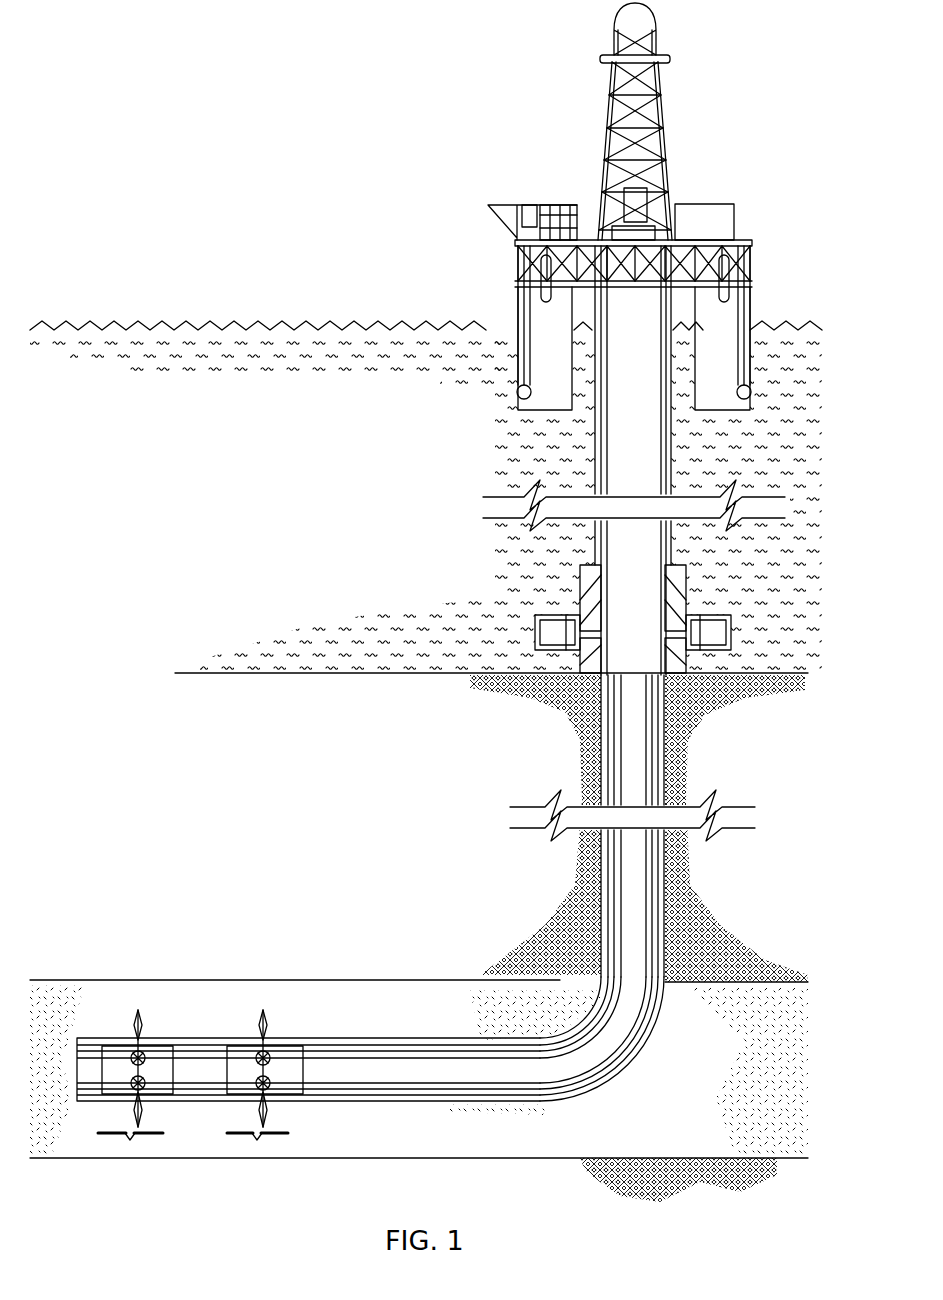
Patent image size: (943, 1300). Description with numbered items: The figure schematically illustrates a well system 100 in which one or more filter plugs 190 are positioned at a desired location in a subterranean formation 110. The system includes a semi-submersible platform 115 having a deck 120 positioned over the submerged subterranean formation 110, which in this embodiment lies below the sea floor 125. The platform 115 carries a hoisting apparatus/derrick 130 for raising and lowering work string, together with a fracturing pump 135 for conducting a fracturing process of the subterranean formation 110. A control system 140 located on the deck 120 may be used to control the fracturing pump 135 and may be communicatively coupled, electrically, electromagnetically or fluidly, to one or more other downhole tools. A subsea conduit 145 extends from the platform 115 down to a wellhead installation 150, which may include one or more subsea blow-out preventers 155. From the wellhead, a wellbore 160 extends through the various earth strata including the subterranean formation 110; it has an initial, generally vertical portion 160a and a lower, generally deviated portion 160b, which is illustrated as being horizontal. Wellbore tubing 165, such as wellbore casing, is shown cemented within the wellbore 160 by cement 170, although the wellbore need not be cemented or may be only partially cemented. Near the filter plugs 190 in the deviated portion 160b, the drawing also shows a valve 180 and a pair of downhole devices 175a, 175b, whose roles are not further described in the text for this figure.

The well system 100 is at (260, 68).
The subterranean formation 110 is at (748, 1083).
The semi-submersible platform 115 is at (752, 282).
The deck 120 is at (745, 243).
The sea floor 125 is at (195, 672).
The hoisting apparatus/derrick 130 is at (612, 40).
The fracturing pump 135 is at (702, 204).
The control system 140 is at (552, 204).
The subsea conduit 145 is at (673, 432).
The wellhead installation 150 is at (688, 590).
The subsea blow-out preventer 155 is at (729, 624).
The wellbore 160 is at (602, 1039).
The generally vertical portion 160a is at (600, 784).
The generally deviated portion 160b is at (397, 1036).
The wellbore tubing 165 is at (600, 866).
The cement 170 is at (666, 862).
The sensor 175a is at (257, 1140).
The sensor 175b is at (130, 1140).
The valve 180 is at (140, 1035).
The filter plug 190 is at (303, 1057).